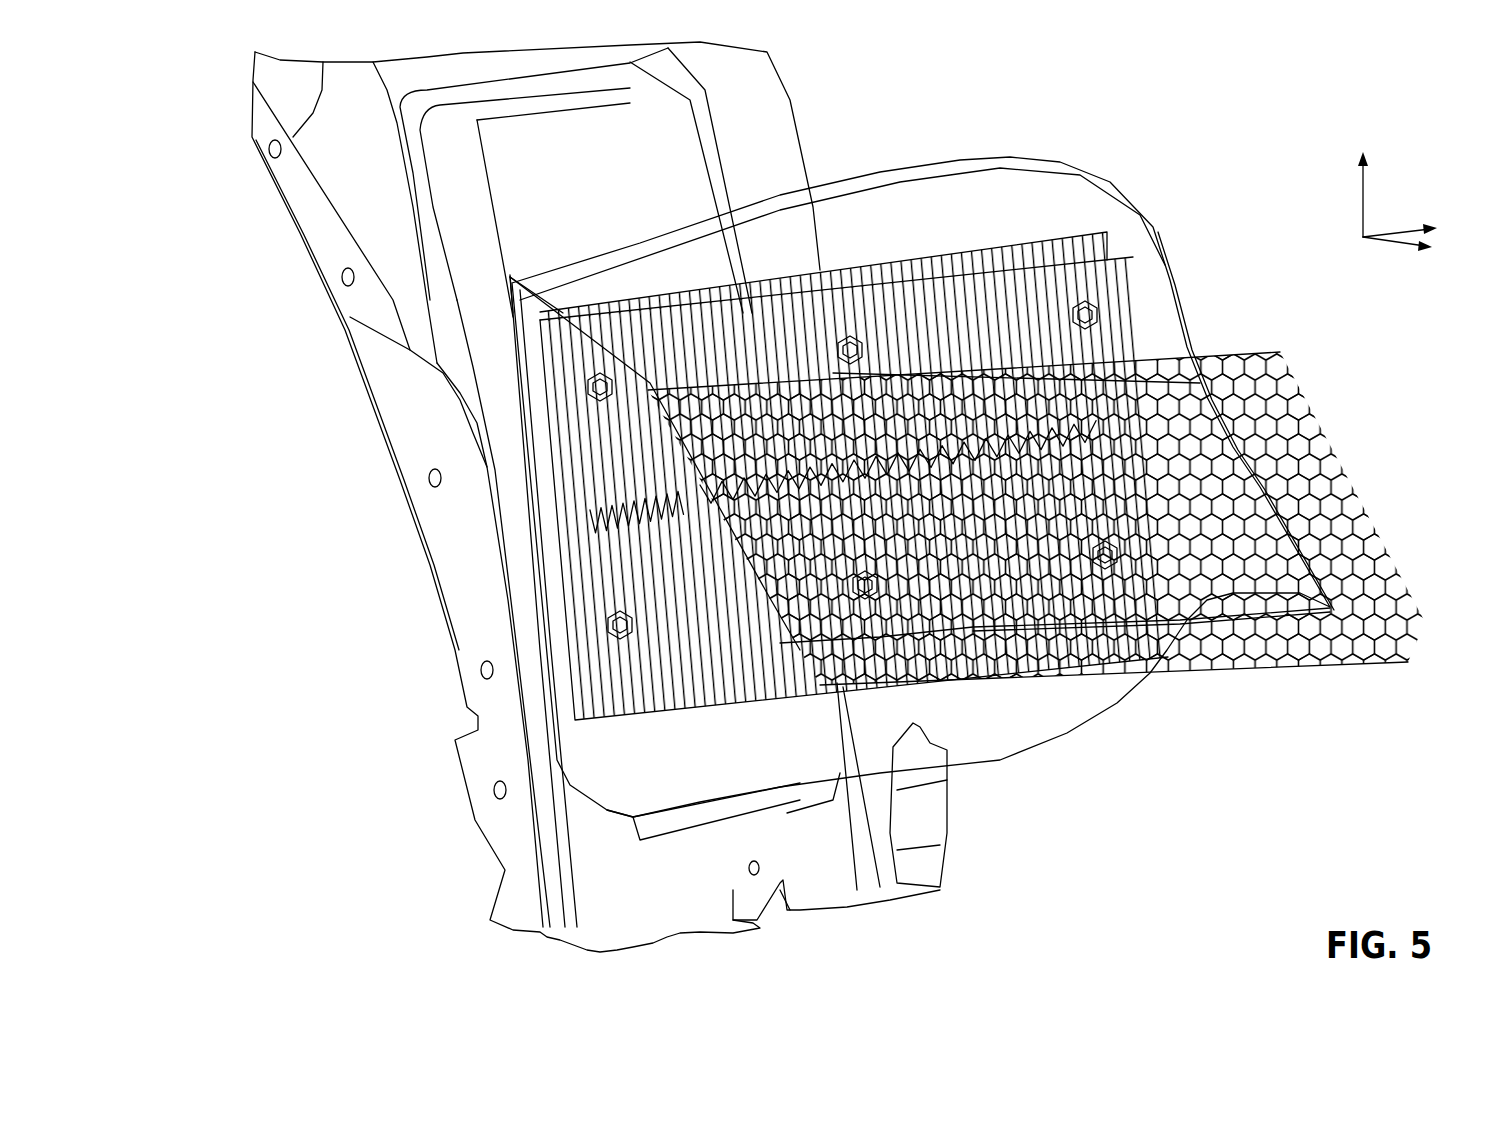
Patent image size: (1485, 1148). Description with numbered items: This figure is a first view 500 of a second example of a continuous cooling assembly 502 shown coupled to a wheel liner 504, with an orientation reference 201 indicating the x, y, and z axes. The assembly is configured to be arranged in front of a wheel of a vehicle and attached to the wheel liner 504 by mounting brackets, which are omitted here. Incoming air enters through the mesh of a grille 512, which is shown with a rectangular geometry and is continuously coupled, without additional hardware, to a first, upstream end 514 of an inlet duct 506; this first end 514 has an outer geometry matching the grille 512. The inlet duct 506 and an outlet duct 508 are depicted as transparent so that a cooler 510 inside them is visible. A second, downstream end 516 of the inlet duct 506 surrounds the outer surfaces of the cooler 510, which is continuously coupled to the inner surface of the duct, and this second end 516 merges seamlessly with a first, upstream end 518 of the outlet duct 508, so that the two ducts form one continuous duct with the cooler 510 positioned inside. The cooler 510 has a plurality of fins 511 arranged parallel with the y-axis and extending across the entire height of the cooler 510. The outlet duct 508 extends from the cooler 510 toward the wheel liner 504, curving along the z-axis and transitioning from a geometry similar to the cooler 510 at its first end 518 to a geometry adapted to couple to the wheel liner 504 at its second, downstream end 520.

The first view 500 is at (172, 122).
The coordinate system 201 is at (1405, 190).
The continuous cooling assembly 502 is at (1150, 140).
The wheel liner 504 is at (405, 415).
The inlet duct 506 is at (920, 165).
The outlet duct 508 is at (506, 349).
The cooler 510 is at (570, 468).
The plurality of fins 511 is at (930, 285).
The grille 512 is at (1265, 353).
The first, upstream end of the inlet duct 514 is at (800, 687).
The second, downstream end of the inlet duct 516 is at (1135, 308).
The first, upstream end of the outlet duct 518 is at (1000, 250).
The second, downstream end of the outlet duct 520 is at (537, 265).